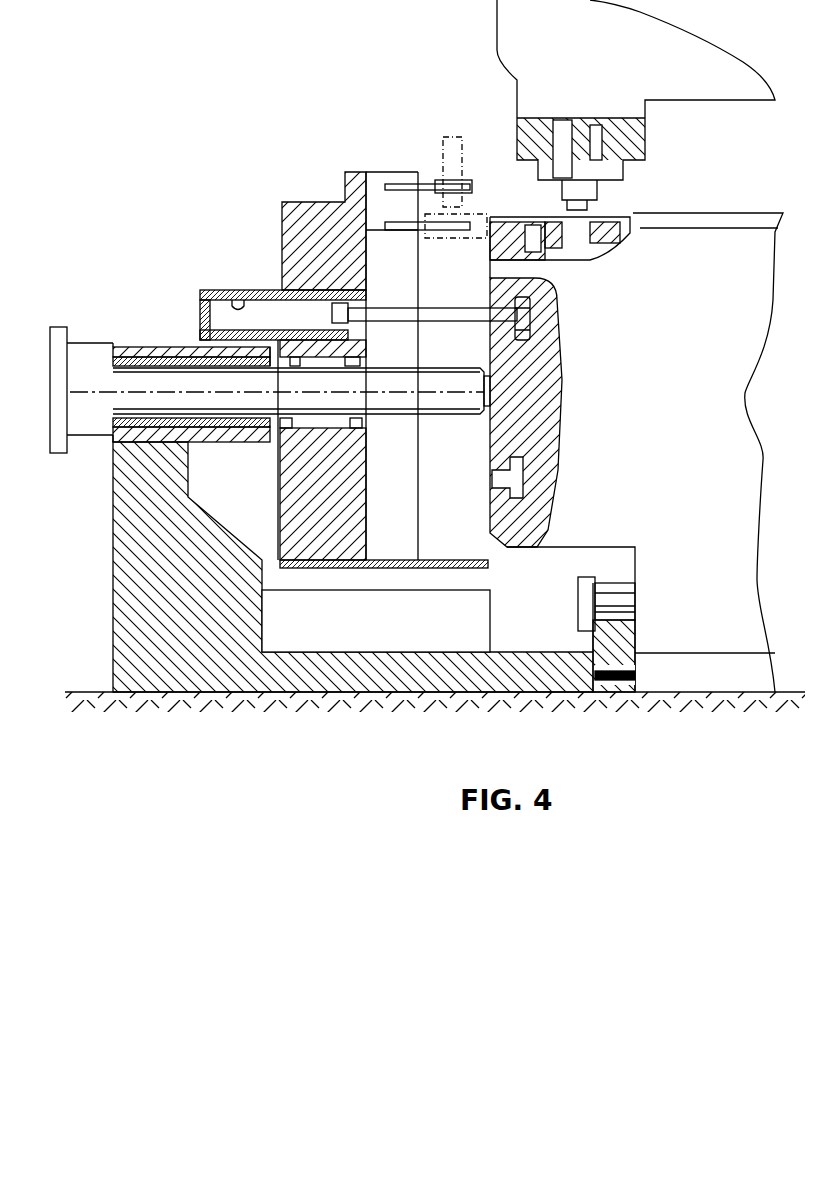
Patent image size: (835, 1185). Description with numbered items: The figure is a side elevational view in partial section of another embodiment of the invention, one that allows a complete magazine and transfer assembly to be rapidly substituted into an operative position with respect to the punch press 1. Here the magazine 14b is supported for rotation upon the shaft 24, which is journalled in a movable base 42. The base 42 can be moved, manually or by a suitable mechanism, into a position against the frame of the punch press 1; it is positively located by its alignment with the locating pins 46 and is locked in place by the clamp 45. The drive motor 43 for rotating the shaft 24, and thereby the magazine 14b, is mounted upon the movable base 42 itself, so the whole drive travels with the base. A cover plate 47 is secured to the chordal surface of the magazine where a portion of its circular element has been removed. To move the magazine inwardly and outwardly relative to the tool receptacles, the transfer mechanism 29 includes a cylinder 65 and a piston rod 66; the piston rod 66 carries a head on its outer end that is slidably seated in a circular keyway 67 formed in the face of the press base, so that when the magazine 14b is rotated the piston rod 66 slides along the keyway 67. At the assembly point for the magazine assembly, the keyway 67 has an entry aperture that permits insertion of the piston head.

The punch press 1 is at (740, 590).
The magazine 14b is at (307, 238).
The shaft 24 is at (178, 398).
The transfer mechanism 29 is at (197, 285).
The movable base 42 is at (220, 663).
The drive motor 43 is at (85, 358).
The clamp 45 is at (588, 586).
The locating pins 46 is at (608, 672).
The cover plate 47 is at (483, 563).
The cylinder 65 is at (238, 298).
The piston rod 66 is at (397, 305).
The circular keyway 67 is at (521, 474).